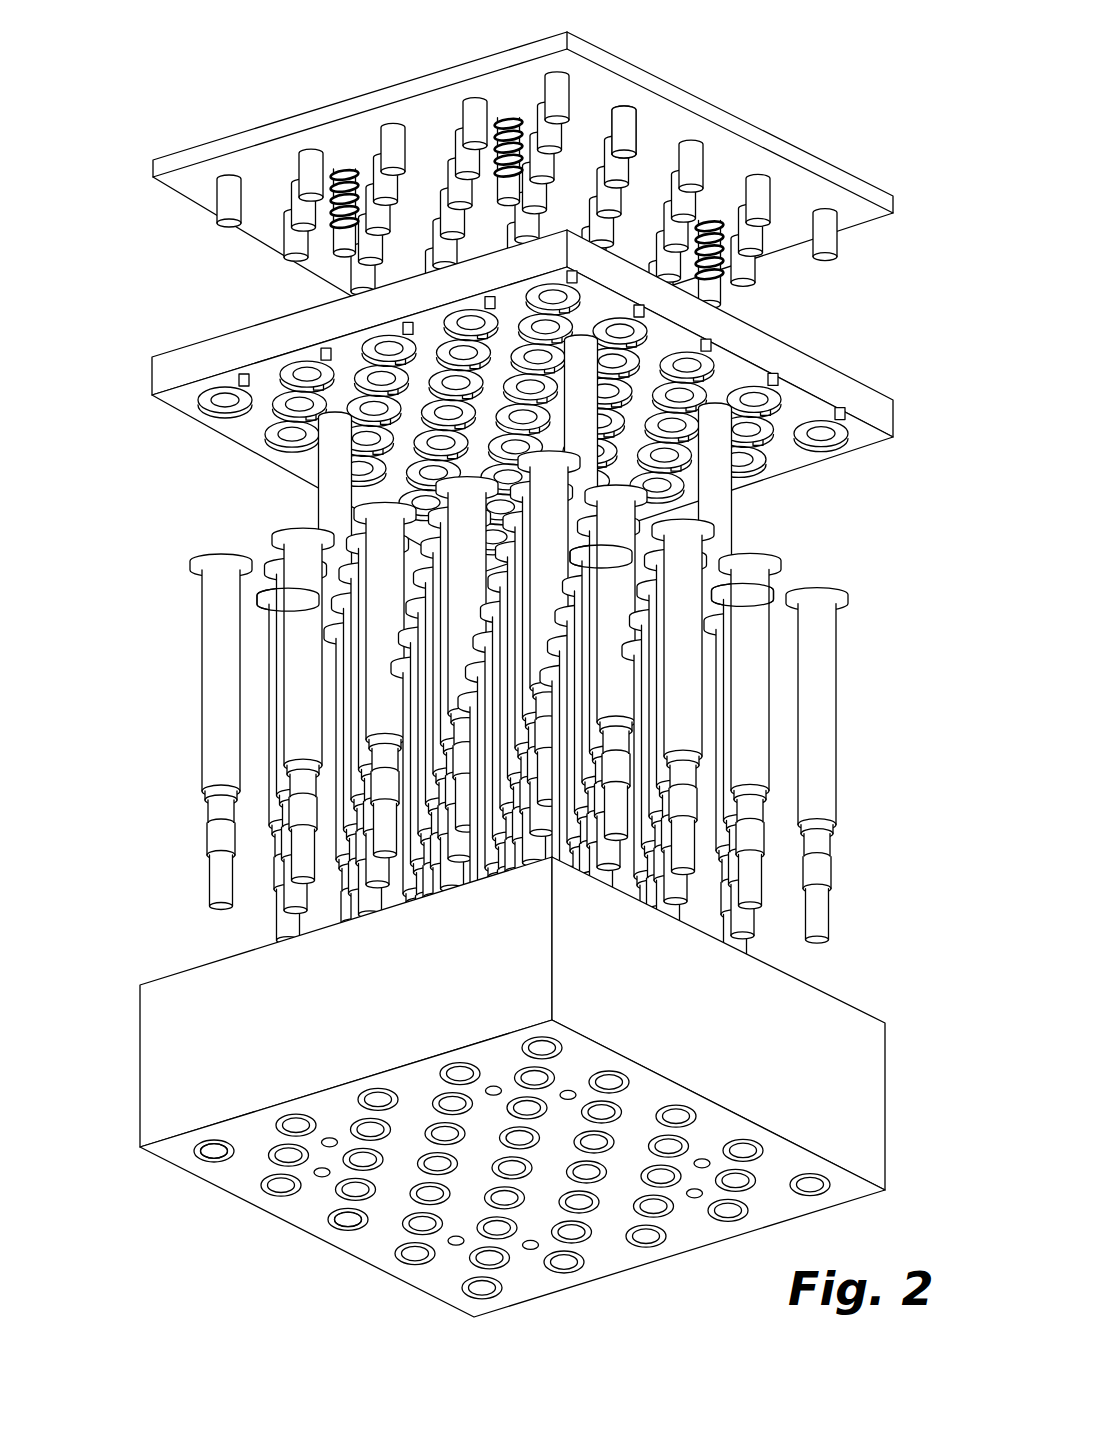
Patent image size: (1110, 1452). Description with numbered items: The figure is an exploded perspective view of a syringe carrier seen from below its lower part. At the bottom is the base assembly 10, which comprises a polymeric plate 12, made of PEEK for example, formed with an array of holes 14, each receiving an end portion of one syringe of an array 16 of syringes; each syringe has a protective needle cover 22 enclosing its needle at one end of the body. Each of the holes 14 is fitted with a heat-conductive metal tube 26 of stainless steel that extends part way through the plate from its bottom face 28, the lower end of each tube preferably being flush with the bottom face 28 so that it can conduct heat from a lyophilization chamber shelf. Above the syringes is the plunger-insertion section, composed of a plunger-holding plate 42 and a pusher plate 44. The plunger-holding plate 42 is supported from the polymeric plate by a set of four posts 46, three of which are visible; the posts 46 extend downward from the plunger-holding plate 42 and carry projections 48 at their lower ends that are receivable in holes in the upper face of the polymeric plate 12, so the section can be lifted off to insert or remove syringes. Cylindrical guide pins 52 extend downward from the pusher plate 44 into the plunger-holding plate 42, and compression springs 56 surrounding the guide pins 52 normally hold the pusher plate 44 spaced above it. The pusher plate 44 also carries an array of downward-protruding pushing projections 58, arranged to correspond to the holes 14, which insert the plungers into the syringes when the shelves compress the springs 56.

The base assembly 10 is at (470, 1097).
The polymeric plate 12 is at (142, 1092).
The holes 14 is at (212, 1160).
The array of syringes 16 is at (547, 749).
The protective needle cover 22 is at (824, 888).
The heat-conductive metal tube 26 is at (198, 1156).
The bottom face 28 is at (426, 1285).
The plunger-holding plate 42 is at (895, 418).
The pusher plate 44 is at (903, 206).
The posts 46 is at (583, 357).
The projections 48 is at (640, 556).
The cylindrical guide pins 52 is at (512, 193).
The compression springs 56 is at (505, 123).
The pushing projections 58 is at (230, 200).